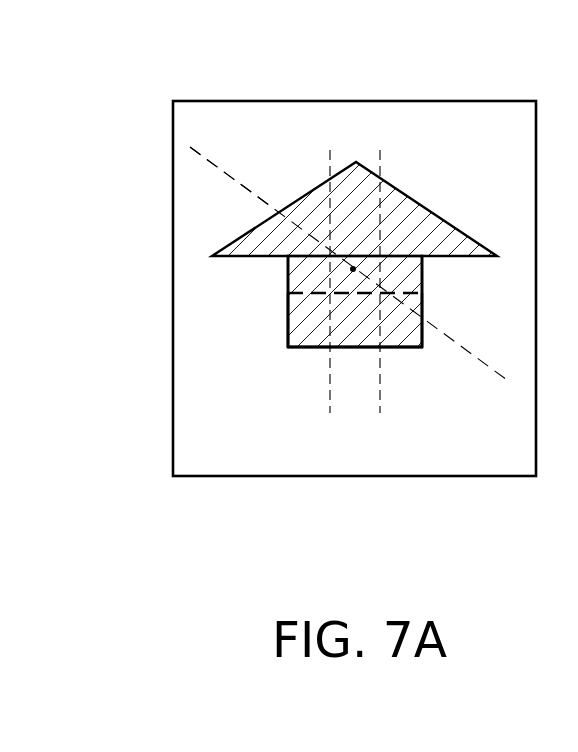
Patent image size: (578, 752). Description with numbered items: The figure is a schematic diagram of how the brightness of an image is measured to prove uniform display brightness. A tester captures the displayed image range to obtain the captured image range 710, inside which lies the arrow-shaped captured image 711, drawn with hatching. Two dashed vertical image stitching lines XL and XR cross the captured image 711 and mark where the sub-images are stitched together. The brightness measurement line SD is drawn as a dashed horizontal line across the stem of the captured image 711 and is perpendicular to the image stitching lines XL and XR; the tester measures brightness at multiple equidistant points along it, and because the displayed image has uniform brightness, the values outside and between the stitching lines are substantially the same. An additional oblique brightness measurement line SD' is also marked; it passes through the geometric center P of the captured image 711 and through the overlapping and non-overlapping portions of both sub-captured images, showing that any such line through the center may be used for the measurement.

The captured image range 710 is at (259, 98).
The captured image 711 is at (246, 231).
The geometric center P is at (355, 267).
The brightness measurement line SD is at (348, 263).
The brightness measurement line SD' is at (251, 161).
The image stitching line XL is at (329, 305).
The image stitching line XR is at (381, 305).